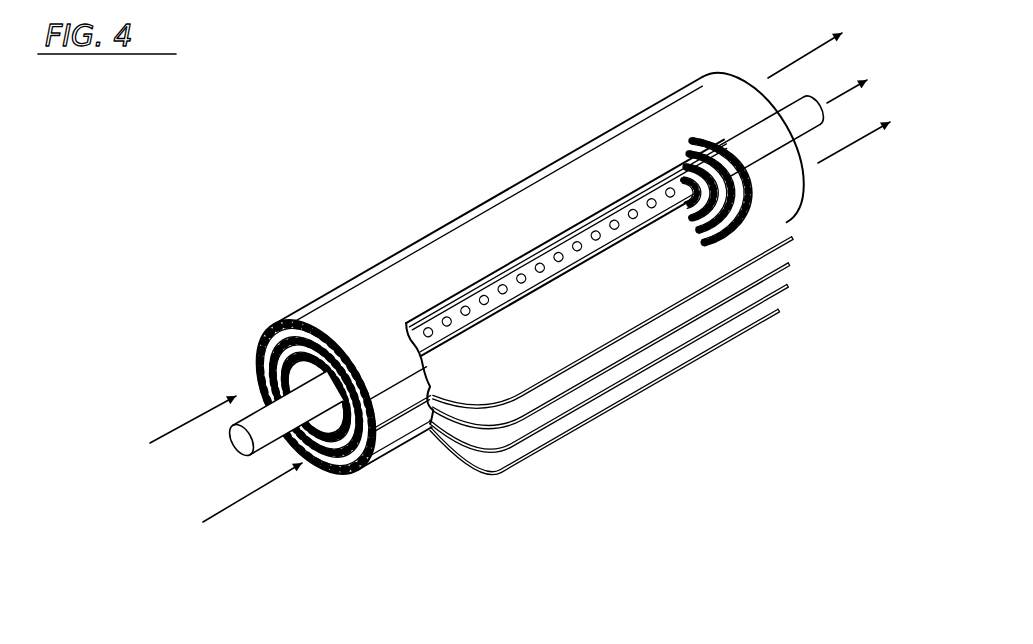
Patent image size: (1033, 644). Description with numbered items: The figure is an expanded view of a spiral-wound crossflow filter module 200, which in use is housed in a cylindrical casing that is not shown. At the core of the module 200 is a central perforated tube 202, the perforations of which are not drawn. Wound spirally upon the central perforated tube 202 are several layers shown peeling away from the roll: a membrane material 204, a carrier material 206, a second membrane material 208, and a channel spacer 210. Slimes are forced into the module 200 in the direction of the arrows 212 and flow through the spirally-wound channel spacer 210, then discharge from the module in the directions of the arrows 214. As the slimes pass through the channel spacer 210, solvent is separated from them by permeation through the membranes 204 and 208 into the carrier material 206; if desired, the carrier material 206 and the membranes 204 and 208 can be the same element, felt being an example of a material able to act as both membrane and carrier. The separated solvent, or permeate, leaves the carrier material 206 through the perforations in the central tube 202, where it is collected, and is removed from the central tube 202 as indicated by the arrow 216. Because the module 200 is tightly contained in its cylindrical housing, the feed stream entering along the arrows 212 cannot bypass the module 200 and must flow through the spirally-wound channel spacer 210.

The spiral-wound crossflow filter module 200 is at (447, 621).
The central perforated tube 202 is at (568, 283).
The membrane material 204 is at (790, 233).
The carrier material 206 is at (792, 260).
The membrane material 208 is at (783, 286).
The channel spacer 210 is at (777, 310).
The arrows (feed stream direction) 212 is at (201, 474).
The arrows (discharge direction) 214 is at (830, 83).
The arrow (permeate removal) 216 is at (870, 76).